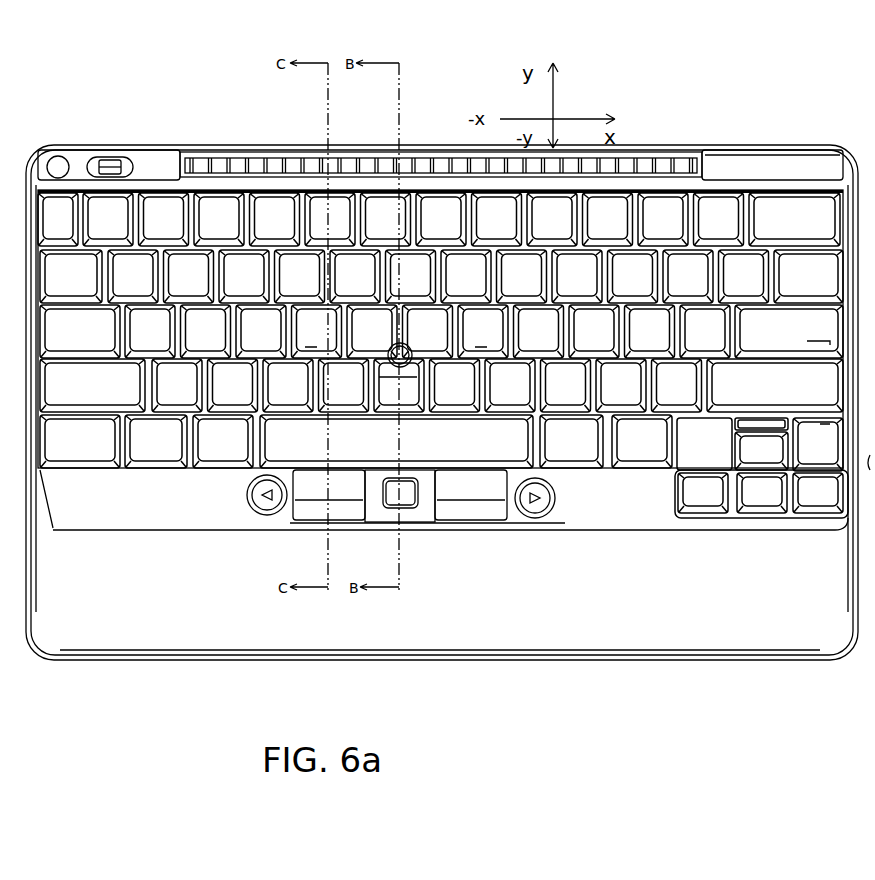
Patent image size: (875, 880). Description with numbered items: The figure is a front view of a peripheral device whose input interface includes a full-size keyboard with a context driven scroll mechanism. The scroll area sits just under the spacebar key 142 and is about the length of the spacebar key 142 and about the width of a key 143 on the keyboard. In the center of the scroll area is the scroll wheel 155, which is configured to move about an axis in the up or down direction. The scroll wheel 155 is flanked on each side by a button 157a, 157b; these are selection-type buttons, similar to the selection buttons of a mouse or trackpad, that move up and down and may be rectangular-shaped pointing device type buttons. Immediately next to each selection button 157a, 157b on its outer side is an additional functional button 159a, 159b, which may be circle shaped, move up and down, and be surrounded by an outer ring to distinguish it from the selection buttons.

The spacebar key 142 is at (443, 394).
The key 143 is at (622, 395).
The scroll wheel 155 is at (407, 503).
The button 157a is at (343, 512).
The button 157b is at (473, 512).
The button 159a is at (265, 515).
The button 159b is at (535, 512).